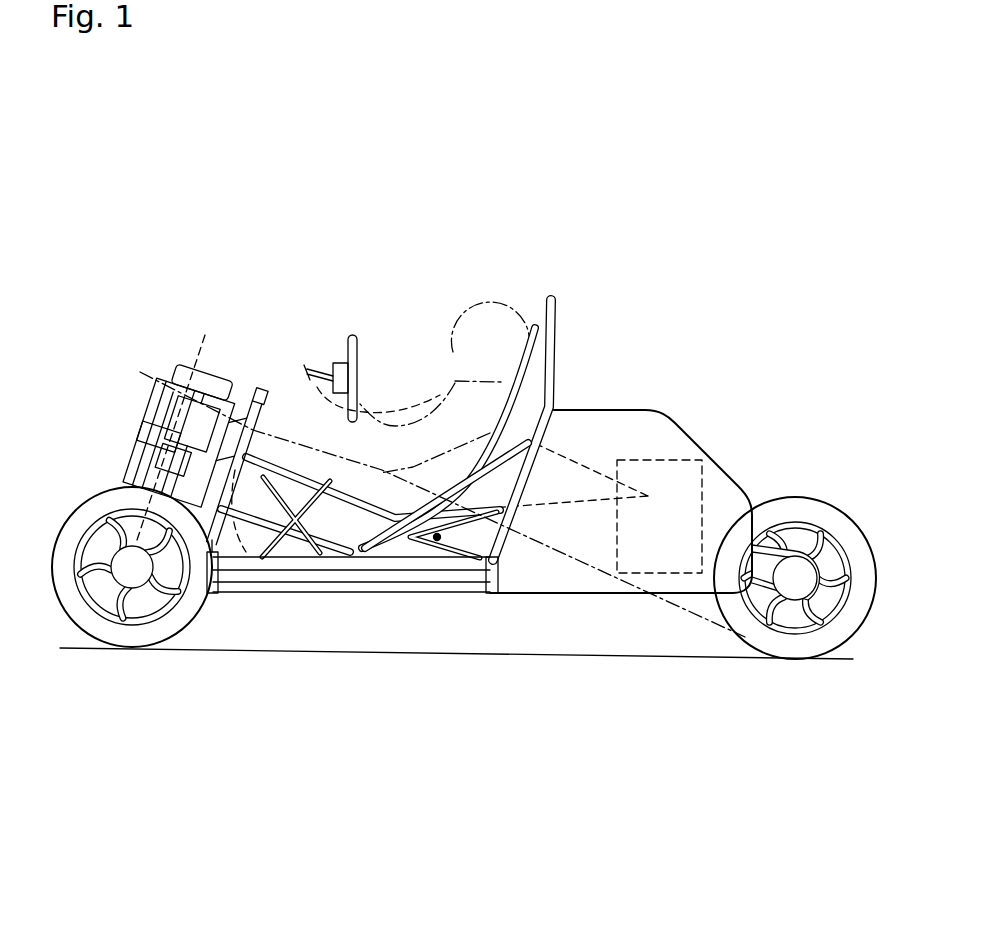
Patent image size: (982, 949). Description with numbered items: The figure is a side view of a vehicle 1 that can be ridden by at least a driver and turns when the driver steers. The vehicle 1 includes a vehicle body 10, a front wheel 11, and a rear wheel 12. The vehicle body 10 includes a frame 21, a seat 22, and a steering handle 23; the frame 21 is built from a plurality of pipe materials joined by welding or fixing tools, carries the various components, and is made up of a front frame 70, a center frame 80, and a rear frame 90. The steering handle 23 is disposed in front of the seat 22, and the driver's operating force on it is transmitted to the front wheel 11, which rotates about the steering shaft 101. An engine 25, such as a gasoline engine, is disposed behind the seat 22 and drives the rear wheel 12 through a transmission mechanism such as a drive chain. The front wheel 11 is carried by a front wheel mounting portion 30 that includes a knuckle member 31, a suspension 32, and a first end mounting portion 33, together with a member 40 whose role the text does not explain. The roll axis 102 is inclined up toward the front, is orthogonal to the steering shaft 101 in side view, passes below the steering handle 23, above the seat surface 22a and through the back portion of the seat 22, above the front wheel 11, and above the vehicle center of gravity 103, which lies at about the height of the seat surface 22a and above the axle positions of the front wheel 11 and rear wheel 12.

The vehicle 1 is at (828, 190).
The vehicle body 10 is at (420, 303).
The front wheel 11 is at (75, 603).
The rear wheel 12 is at (845, 628).
The frame 21 is at (518, 740).
The seat 22 is at (530, 348).
The seat surface 22a is at (388, 495).
The steering handle 23 is at (352, 336).
The engine 25 is at (745, 477).
The front wheel mounting portion 30 is at (175, 359).
The knuckle member 31 is at (179, 442).
The suspension 32 is at (173, 440).
The first end mounting portion 33 is at (229, 464).
The upper member 40 is at (202, 382).
The front frame 70 is at (220, 583).
The center frame 80 is at (355, 600).
The rear frame 90 is at (528, 590).
The steering shaft 101 is at (205, 335).
The roll axis 102 is at (683, 613).
The vehicle center of gravity 103 is at (440, 538).